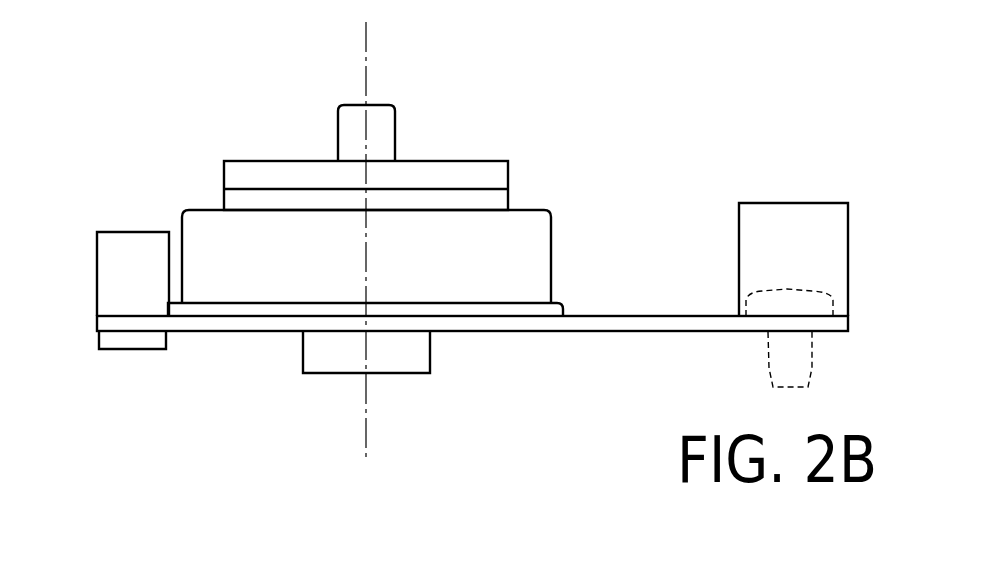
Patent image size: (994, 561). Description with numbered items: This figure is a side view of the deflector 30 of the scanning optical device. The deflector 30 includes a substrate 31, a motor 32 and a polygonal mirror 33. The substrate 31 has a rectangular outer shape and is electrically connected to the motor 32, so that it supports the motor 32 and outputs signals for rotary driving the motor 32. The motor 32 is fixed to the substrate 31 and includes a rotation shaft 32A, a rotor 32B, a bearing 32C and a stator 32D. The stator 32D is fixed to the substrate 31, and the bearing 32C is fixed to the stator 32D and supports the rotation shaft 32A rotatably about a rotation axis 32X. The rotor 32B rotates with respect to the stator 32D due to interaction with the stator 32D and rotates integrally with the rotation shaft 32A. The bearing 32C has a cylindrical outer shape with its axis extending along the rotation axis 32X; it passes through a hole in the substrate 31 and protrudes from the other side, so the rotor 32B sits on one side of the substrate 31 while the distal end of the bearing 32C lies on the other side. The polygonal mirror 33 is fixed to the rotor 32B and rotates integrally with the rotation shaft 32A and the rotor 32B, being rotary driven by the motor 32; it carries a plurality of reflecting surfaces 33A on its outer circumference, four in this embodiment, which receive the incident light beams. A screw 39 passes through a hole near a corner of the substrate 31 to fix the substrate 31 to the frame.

The deflector 30 is at (672, 85).
The substrate 31 is at (662, 323).
The motor 32 is at (404, 248).
The rotation shaft 32A is at (387, 128).
The rotor 32B is at (537, 245).
The bearing 32C is at (420, 354).
The stator 32D is at (532, 307).
The rotation axis 32X is at (366, 49).
The polygonal mirror 33 is at (432, 184).
The reflecting surface 33A is at (492, 175).
The screw 39 is at (785, 290).